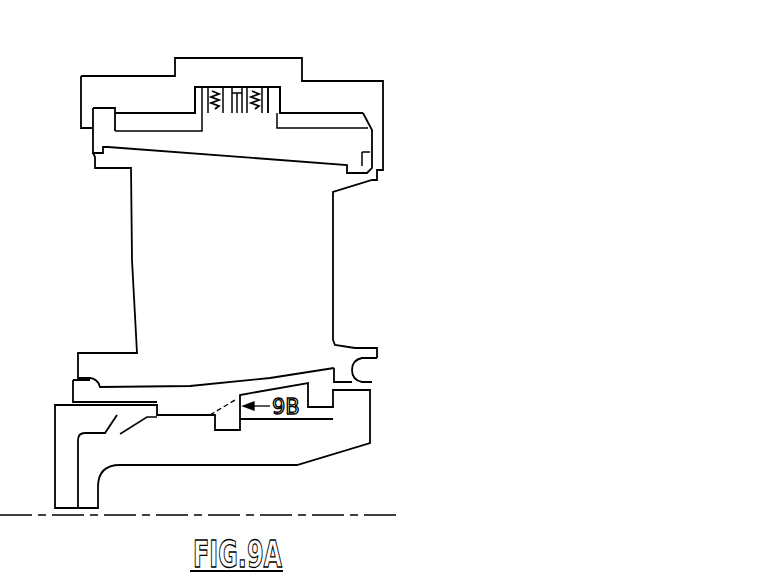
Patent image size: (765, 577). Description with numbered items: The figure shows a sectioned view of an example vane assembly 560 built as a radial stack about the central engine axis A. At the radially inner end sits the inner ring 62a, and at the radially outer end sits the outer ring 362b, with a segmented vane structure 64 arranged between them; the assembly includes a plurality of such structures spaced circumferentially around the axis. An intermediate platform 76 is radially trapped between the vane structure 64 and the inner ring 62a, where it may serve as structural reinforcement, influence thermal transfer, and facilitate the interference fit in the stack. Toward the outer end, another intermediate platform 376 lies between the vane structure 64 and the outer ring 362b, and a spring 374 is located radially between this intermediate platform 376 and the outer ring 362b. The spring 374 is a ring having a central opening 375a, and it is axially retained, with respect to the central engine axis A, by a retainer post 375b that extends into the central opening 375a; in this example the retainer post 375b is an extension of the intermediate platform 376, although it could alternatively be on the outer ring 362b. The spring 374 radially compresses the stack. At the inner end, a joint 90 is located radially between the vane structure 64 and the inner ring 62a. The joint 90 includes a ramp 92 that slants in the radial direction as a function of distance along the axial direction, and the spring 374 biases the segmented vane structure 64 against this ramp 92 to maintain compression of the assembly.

The vane assembly 560 is at (76, 273).
The central opening 375a is at (236, 85).
The outer ring 362b is at (252, 58).
The retainer post 375b is at (245, 100).
The spring 374 is at (288, 100).
The intermediate platform 376 is at (352, 128).
The segmented vane structure 64 is at (345, 269).
The intermediate platform 76 is at (363, 382).
The inner ring 62a is at (160, 476).
The joint 90 is at (202, 430).
The ramp 92 is at (223, 405).
The central engine axis A is at (371, 515).